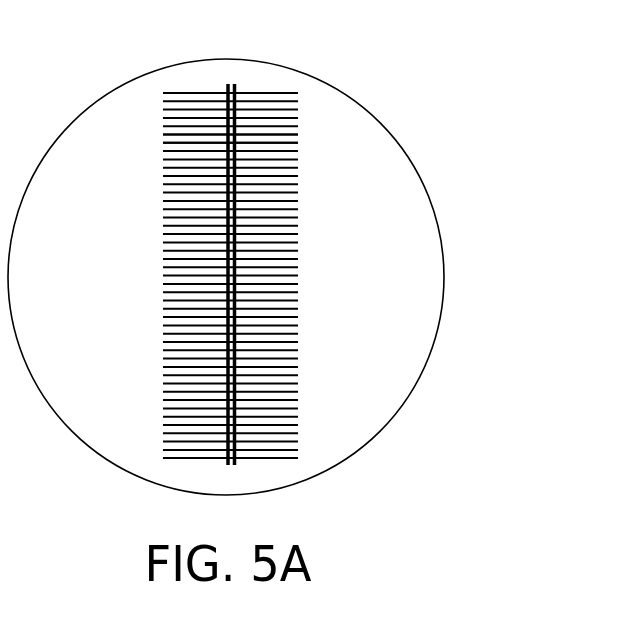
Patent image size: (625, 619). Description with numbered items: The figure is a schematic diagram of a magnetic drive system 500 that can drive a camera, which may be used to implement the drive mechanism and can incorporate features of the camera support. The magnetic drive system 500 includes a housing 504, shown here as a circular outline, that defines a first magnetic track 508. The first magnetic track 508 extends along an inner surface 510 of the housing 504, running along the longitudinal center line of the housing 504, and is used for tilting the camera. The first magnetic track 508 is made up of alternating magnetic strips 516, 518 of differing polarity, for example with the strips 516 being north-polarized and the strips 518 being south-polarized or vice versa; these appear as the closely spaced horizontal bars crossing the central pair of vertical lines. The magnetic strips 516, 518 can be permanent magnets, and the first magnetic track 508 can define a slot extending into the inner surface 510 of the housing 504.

The magnetic drive system 500 is at (207, 32).
The housing 504 is at (395, 133).
The first magnetic track 508 is at (182, 87).
The inner surface 510 is at (413, 283).
The magnetic strips 516 is at (163, 133).
The magnetic strips 518 is at (162, 143).